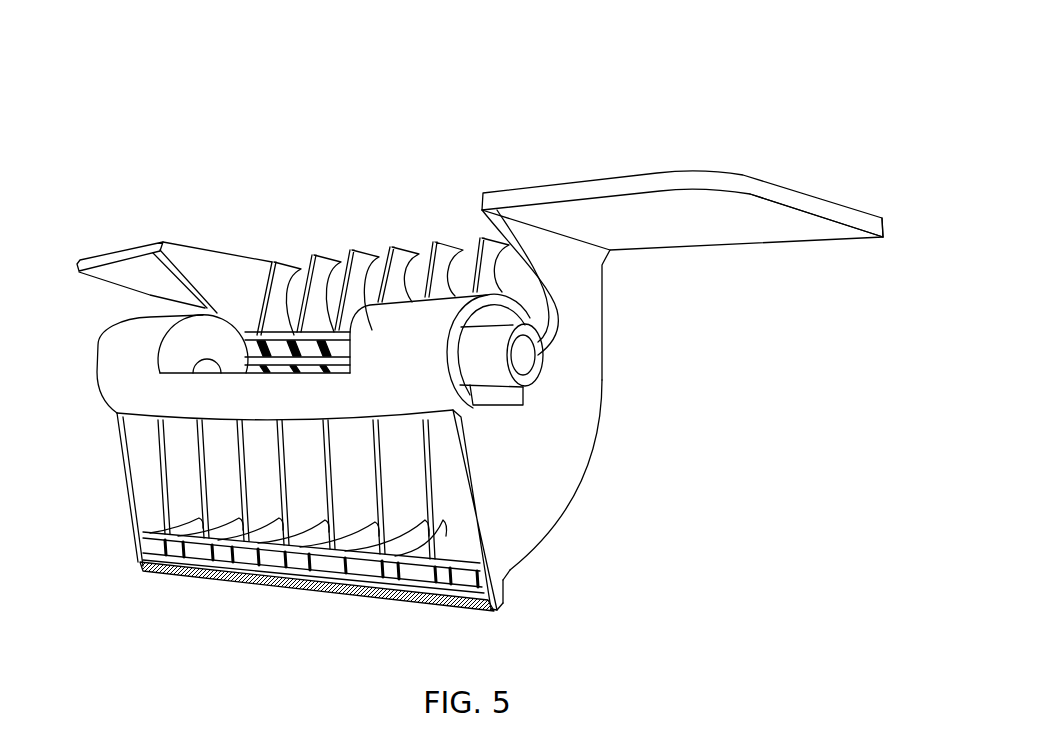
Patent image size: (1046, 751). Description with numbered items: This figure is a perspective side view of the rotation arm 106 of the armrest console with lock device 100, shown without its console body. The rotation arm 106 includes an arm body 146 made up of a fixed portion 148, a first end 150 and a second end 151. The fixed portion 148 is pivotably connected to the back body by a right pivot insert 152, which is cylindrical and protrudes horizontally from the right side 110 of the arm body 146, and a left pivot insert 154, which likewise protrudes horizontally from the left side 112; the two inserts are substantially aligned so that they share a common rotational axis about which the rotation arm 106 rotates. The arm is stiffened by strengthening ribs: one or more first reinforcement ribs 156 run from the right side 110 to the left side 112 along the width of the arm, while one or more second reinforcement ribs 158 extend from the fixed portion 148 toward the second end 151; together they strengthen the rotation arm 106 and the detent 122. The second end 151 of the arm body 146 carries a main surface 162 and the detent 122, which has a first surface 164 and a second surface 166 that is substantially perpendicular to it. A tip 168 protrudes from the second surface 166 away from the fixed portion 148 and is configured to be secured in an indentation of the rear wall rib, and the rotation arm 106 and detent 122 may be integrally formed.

The vent assembly 100 is at (466, 50).
The rotation arm 106 is at (572, 193).
The right side 110 is at (82, 265).
The left side 112 is at (822, 209).
The detent 122 is at (130, 562).
The arm body 146 is at (585, 300).
The fixed portion 148 is at (400, 315).
The first end 150 is at (776, 237).
The second end 151 is at (510, 571).
The right pivot insert 152 is at (203, 362).
The left pivot insert 154 is at (530, 370).
The first reinforcement ribs 156 is at (165, 568).
The second reinforcement ribs 158 is at (223, 517).
The main surface 162 is at (553, 530).
The first surface 164 is at (503, 592).
The second surface 166 is at (497, 612).
The tip 168 is at (480, 606).